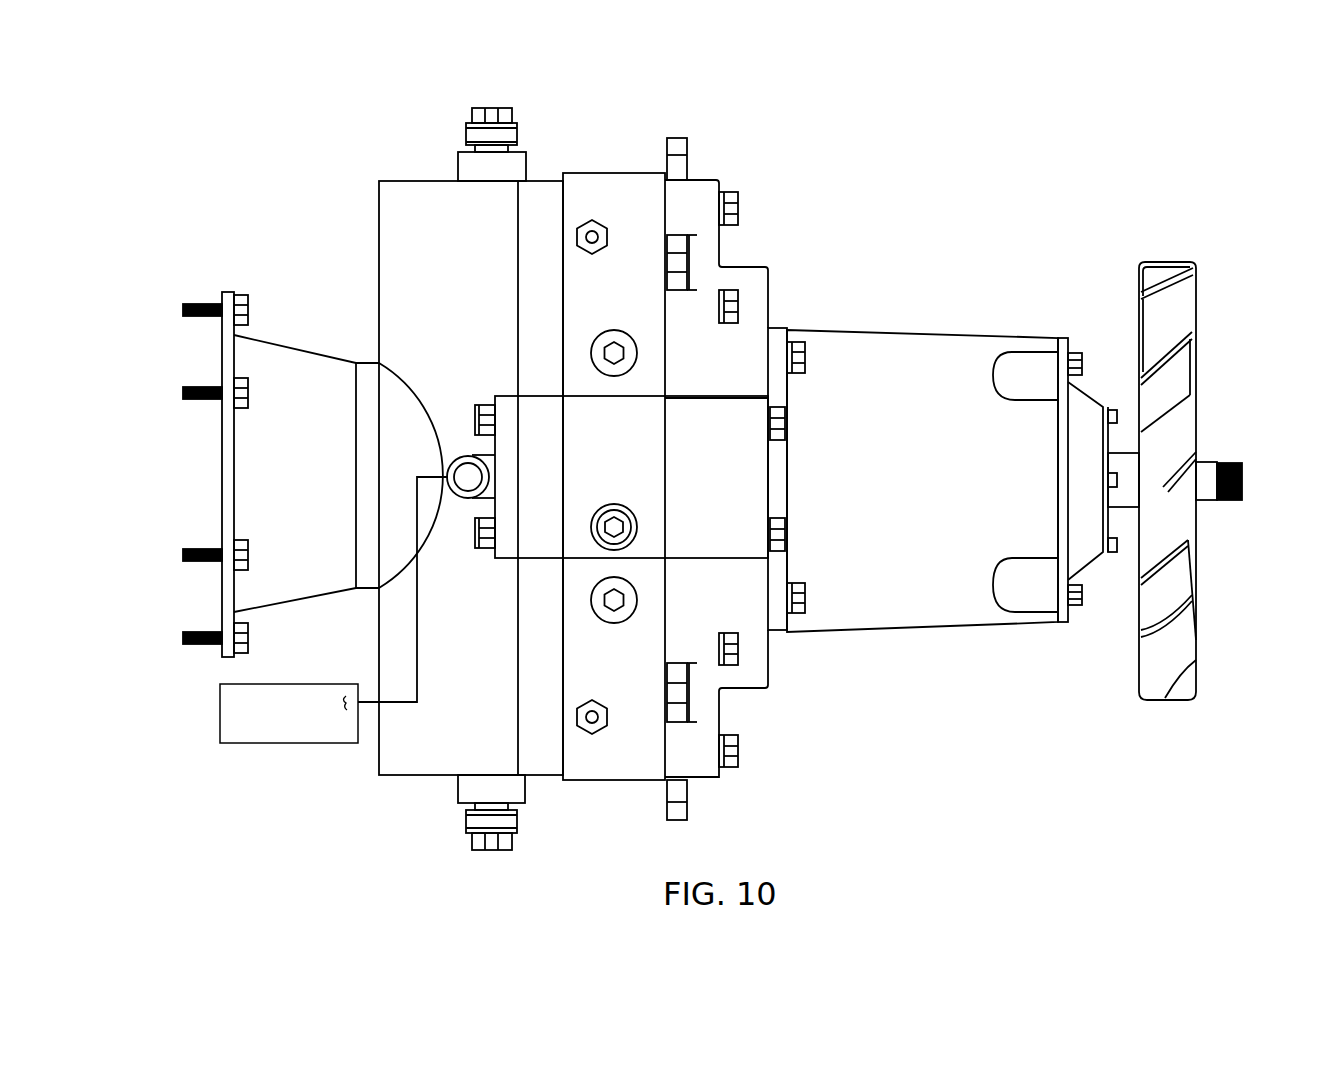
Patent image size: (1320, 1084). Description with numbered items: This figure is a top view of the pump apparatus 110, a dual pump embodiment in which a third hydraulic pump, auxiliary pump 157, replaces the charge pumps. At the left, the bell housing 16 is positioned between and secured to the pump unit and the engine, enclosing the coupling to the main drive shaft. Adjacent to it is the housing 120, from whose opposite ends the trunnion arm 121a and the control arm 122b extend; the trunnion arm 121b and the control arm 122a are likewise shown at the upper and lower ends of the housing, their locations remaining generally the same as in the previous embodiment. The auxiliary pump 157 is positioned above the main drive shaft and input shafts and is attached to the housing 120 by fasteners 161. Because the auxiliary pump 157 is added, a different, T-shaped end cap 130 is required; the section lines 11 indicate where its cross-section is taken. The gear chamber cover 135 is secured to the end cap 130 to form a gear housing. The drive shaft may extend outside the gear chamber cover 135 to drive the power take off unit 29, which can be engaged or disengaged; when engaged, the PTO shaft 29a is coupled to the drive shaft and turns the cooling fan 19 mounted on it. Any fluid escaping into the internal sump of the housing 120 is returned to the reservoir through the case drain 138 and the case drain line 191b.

The pump apparatus 110 is at (220, 154).
The bell housing 16 is at (307, 487).
The housing 120 is at (471, 313).
The trunnion arm 121a is at (470, 152).
The control arm 122a is at (520, 135).
The trunnion arm 121b is at (470, 805).
The control arm 122b is at (520, 824).
The end cap 130 is at (610, 295).
The section lines 11- 11 is at (614, 845).
The gear chamber cover 135 is at (738, 374).
The auxiliary pump 157 is at (549, 487).
The fasteners 161 is at (480, 402).
The case drain 138 is at (467, 475).
The case drain line 191b is at (420, 612).
The power take off unit (PTO) 29 is at (937, 489).
The PTO shaft 29a is at (1125, 500).
The cooling fan 19 is at (1181, 451).